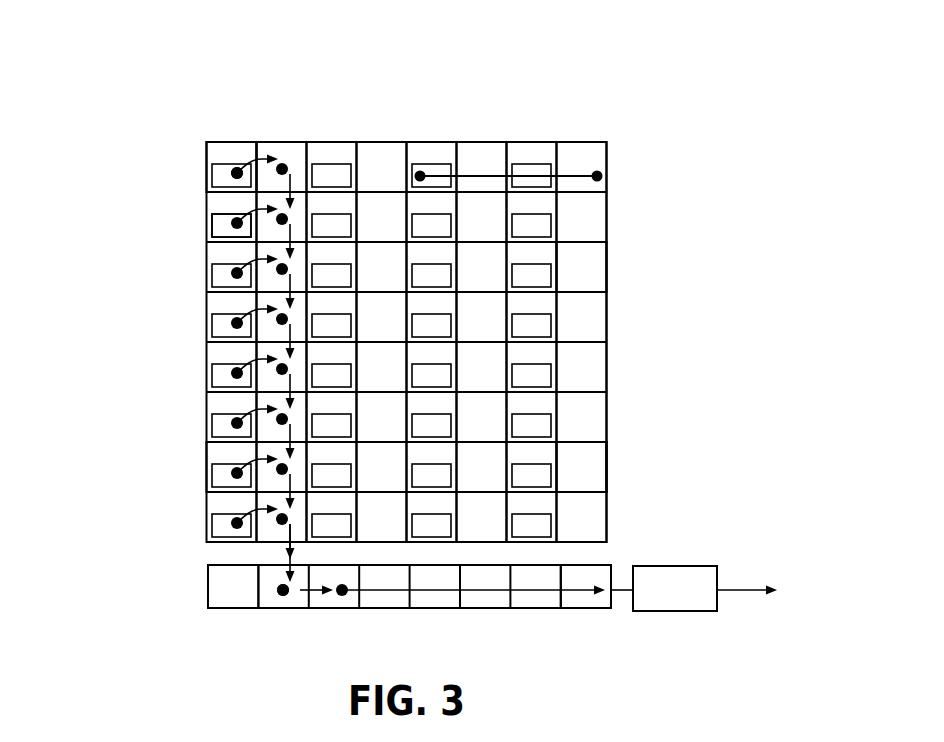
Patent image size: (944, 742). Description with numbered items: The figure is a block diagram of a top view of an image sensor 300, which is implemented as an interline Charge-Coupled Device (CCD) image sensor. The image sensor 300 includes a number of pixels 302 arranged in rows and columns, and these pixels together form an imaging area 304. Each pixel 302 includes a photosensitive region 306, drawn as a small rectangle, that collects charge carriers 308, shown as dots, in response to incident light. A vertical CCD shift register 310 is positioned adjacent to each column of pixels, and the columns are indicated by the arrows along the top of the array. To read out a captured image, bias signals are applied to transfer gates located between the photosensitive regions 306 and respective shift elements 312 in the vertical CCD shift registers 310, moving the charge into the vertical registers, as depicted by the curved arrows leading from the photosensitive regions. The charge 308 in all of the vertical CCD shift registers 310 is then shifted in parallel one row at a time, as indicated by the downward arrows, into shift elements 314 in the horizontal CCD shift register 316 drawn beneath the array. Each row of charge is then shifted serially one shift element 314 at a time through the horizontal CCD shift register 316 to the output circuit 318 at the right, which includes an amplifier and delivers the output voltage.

The image sensor 300 is at (140, 97).
The pixel 302 is at (232, 151).
The imaging area 304 is at (189, 455).
The photosensitive region 306 is at (223, 228).
The charge carriers 308 is at (237, 173).
The vertical CCD shift register 310 is at (283, 131).
The shift element 312 is at (589, 269).
The shift element 314 is at (223, 590).
The horizontal CCD shift register 316 is at (191, 582).
The output circuit 318 is at (675, 588).